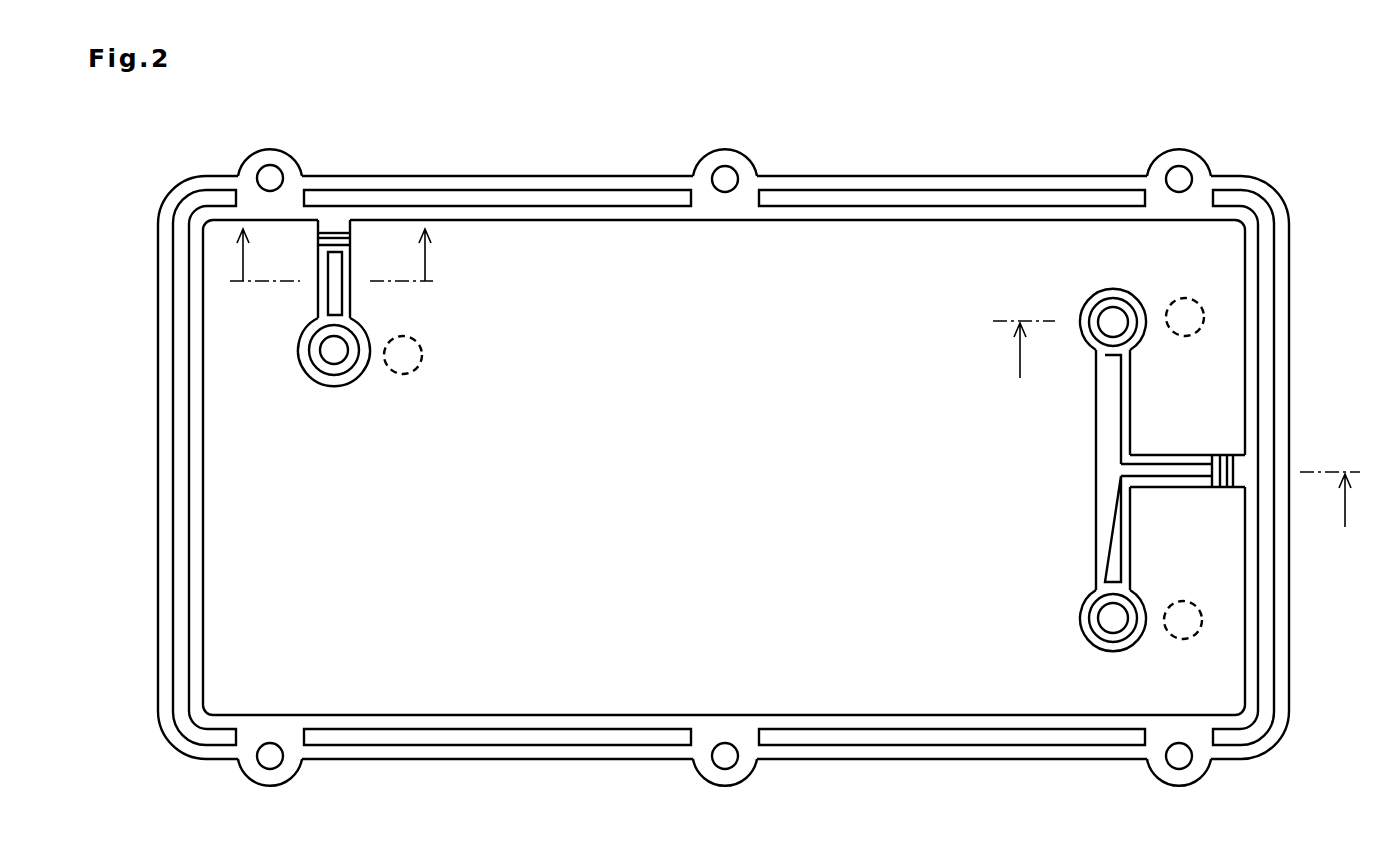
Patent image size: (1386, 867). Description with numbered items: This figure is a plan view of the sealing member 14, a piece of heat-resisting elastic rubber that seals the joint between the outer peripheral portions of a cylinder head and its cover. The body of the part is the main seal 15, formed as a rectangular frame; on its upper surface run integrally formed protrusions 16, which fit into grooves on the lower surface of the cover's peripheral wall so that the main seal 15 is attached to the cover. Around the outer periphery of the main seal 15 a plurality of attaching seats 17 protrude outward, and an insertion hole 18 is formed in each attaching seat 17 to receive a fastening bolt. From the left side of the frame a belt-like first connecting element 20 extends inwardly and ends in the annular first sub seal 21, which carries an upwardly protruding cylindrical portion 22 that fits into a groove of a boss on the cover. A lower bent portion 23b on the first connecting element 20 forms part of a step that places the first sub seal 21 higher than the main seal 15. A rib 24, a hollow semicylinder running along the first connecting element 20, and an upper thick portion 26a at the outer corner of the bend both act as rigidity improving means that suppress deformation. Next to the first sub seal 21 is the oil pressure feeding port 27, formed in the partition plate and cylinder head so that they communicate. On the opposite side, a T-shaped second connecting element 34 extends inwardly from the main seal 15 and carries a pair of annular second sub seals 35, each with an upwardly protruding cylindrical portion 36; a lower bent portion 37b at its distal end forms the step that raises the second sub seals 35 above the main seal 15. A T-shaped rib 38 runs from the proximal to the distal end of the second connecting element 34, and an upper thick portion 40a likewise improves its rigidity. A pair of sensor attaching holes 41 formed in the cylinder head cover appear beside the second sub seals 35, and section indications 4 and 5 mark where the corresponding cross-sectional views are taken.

The sealing member 14 is at (553, 176).
The main seal 15 is at (827, 185).
The protrusions 16 is at (916, 198).
The attaching seats 17 is at (245, 152).
The insertion hole 18 is at (272, 178).
The first connecting element 20 is at (322, 290).
The first sub seal 21 is at (310, 367).
The cylindrical portion 22 is at (352, 362).
The lower bent portion 23b is at (318, 234).
The rib 24 is at (338, 298).
The upper thick portion 26a is at (348, 240).
The oil pressure feeding port 27 is at (427, 367).
The second connecting element 34 is at (1098, 436).
The second sub seals 35 is at (1095, 297).
The cylindrical portion 36 is at (1098, 337).
The lower bent portion 37b is at (1238, 454).
The T-shaped rib 38 is at (1108, 483).
The upper thick portion 40a is at (1216, 488).
The sensor attaching holes 41 is at (1170, 305).
The section line 4- 4 is at (1175, 418).
The section line 5- 5 is at (334, 262).